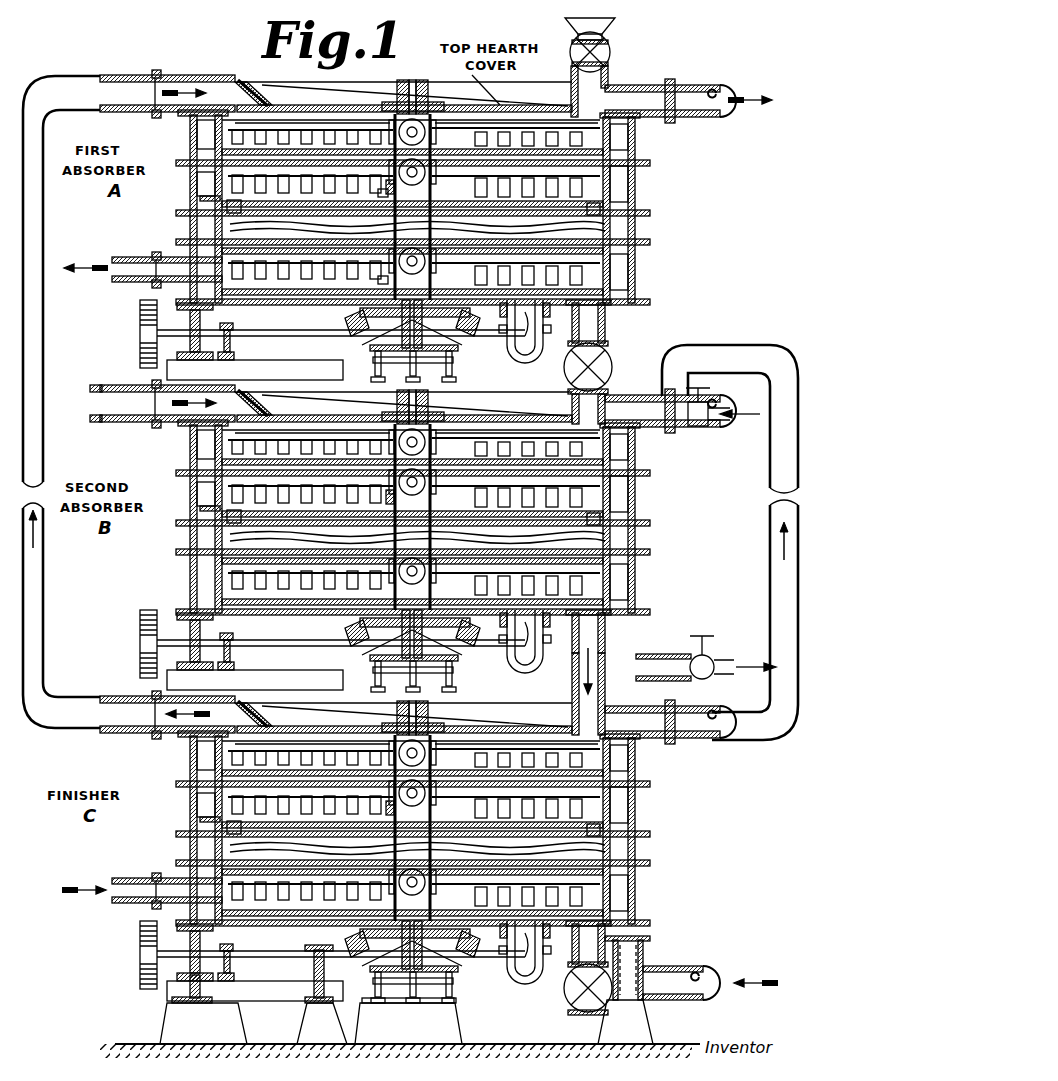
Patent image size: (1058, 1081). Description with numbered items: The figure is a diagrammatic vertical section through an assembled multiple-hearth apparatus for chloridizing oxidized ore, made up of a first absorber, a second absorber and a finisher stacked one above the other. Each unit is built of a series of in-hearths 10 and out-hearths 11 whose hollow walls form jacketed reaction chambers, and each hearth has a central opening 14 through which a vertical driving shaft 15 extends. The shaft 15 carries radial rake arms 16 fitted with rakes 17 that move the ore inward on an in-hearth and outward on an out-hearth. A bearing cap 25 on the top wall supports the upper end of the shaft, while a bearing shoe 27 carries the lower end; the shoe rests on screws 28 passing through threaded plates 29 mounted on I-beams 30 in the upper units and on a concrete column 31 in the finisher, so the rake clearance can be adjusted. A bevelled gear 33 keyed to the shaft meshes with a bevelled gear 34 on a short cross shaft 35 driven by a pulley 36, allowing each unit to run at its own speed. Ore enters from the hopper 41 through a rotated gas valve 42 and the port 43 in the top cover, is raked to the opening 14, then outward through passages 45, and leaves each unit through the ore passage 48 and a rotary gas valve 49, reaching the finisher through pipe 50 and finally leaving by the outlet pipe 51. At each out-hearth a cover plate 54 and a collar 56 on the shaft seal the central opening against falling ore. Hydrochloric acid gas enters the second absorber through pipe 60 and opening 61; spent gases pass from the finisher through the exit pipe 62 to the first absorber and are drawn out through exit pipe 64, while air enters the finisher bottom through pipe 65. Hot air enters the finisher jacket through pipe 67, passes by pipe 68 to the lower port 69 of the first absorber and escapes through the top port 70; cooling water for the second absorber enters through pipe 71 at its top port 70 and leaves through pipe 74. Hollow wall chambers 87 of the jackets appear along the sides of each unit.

The in-hearth 10 is at (195, 241).
The out-hearth 11 is at (195, 193).
The central opening 14 is at (398, 150).
The vertical driving shaft 15 is at (412, 541).
The rake arm 16 is at (407, 518).
The rake 17 is at (390, 182).
The bearing cap 25 is at (397, 93).
The bearing shoe 27 is at (445, 350).
The screw 28 is at (452, 373).
The screw threaded plate 29 is at (458, 361).
The I-beam 30 is at (456, 381).
The concrete column 31 is at (445, 1023).
The bevelled gear 33 is at (350, 326).
The bevelled gear 34 is at (360, 365).
The short cross shaft 35 is at (280, 333).
The pulley 36 is at (140, 321).
The hopper 41 is at (566, 28).
The gas valve 42 is at (610, 53).
The port 43 is at (610, 93).
The outer passage 45 is at (226, 209).
The ore passage 48 is at (588, 632).
The rotary gas valve 49 is at (612, 378).
The pipe 50 is at (572, 694).
The outlet pipe 51 is at (620, 961).
The cover plate 54 is at (369, 277).
The collar 56 is at (369, 190).
The pipe 60 is at (113, 390).
The opening 61 is at (254, 409).
The exit pipe 62 is at (74, 92).
The exit pipe 64 is at (124, 267).
The pipe 65 is at (125, 883).
The pipe 67 is at (712, 982).
The pipe 68 is at (730, 542).
The lower port 69 is at (525, 643).
The port 70 is at (688, 411).
The pipe 71 is at (712, 408).
The pipe 74 is at (724, 666).
The gas chamber 87 is at (200, 136).